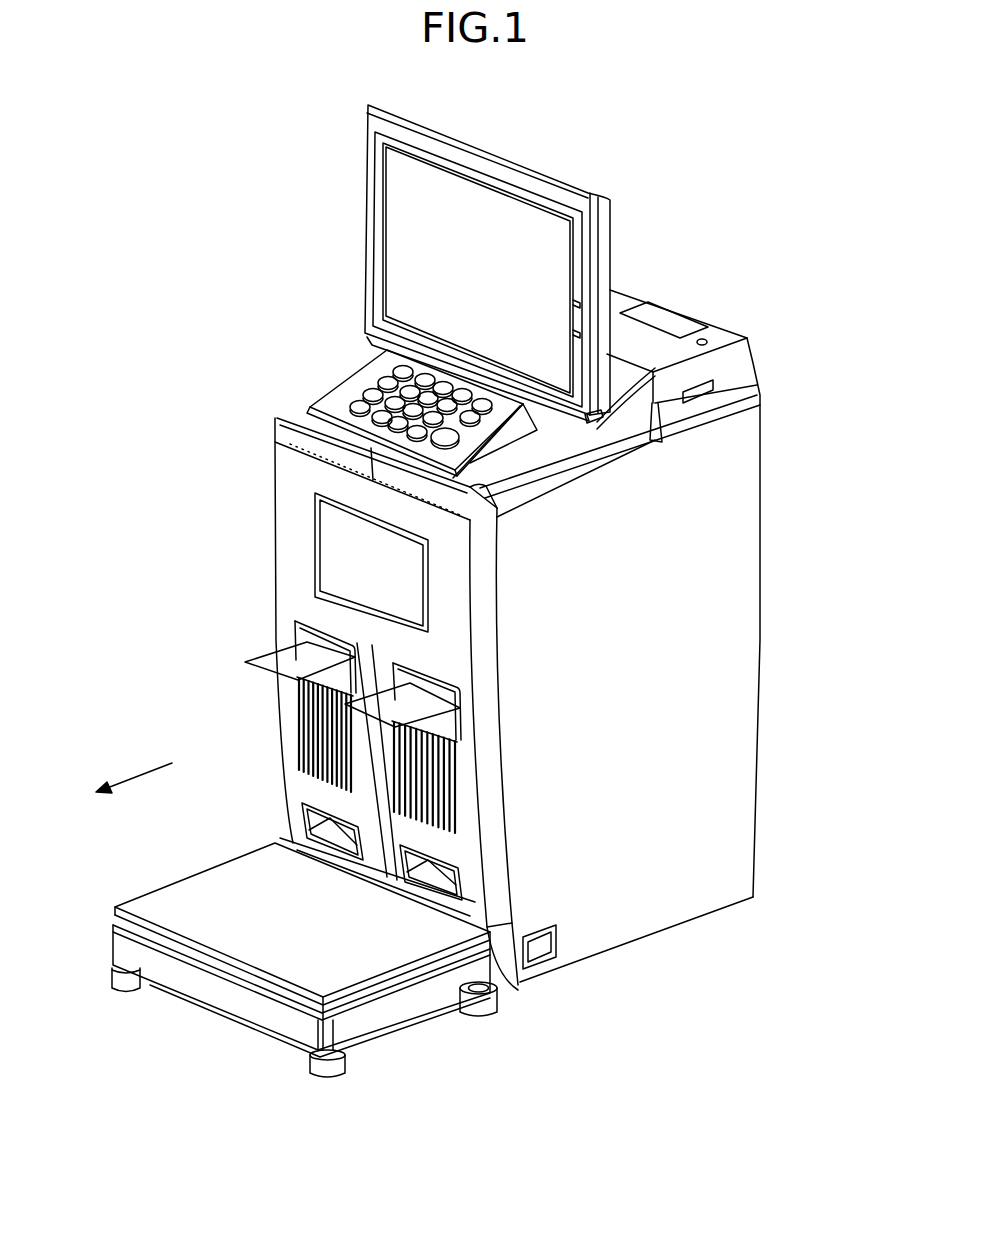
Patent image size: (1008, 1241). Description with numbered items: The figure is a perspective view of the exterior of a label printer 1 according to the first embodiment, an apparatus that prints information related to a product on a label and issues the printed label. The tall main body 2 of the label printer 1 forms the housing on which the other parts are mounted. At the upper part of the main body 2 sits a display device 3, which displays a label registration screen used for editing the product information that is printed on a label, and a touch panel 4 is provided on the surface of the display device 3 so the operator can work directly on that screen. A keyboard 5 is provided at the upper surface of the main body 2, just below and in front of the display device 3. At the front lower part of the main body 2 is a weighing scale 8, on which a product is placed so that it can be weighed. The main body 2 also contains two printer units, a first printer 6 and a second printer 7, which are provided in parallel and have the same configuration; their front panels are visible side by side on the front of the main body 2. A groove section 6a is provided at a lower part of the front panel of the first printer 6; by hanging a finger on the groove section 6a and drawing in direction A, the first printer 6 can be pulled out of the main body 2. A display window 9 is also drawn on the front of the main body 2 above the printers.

The label printer 1 is at (631, 153).
The main body 2 is at (758, 600).
The display device 3 is at (443, 260).
The touch panel 4 is at (400, 237).
The keyboard 5 is at (347, 390).
The first printer 6 is at (448, 848).
The groove section 6a is at (437, 873).
The second printer 7 is at (283, 707).
The weighing scale 8 is at (202, 887).
The customer display 9 is at (335, 560).